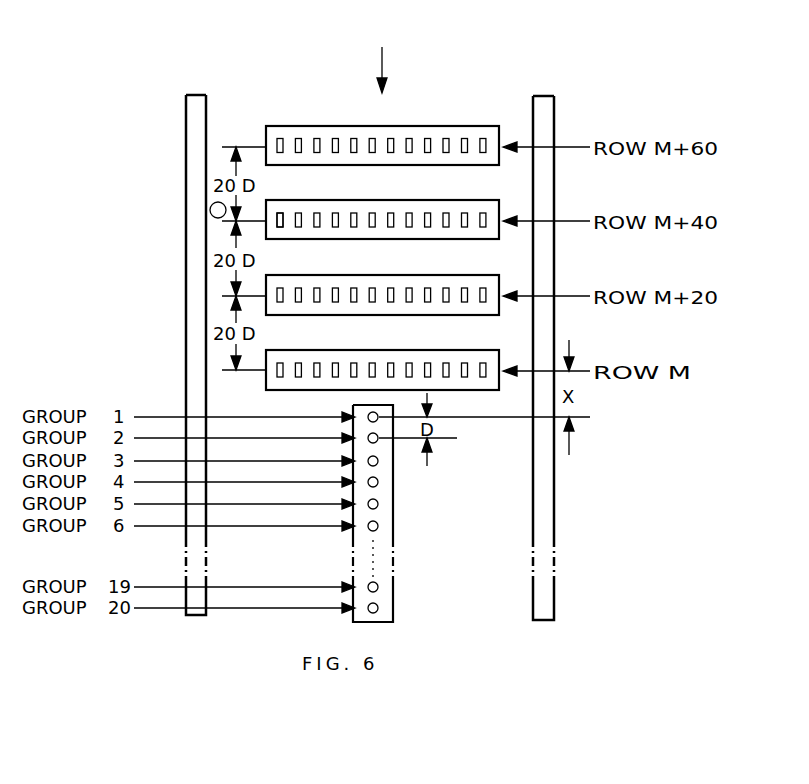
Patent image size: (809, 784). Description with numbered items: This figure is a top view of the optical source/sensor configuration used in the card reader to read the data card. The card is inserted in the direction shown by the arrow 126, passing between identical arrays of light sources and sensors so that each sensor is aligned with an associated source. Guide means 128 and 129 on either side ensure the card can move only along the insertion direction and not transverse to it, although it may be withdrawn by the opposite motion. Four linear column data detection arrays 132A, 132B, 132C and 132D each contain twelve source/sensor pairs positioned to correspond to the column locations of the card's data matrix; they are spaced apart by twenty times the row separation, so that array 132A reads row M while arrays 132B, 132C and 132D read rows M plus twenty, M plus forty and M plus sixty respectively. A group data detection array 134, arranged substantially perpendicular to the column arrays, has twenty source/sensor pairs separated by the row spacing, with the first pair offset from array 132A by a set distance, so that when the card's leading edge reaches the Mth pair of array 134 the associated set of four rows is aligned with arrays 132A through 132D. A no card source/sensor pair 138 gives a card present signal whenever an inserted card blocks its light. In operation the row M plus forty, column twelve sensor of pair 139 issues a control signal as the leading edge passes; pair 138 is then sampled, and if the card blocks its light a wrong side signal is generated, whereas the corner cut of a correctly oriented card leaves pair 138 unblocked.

The arrow 126 is at (385, 58).
The guide means 128 is at (185, 258).
The guide means 129 is at (554, 475).
The column data detection array 132A is at (412, 350).
The column data detection array 132B is at (412, 275).
The column data detection array 132C is at (400, 200).
The column data detection array 132D is at (400, 126).
The group data detection array 134 is at (393, 520).
The no card source/sensor pair 138 is at (212, 205).
The source/sensor pair 139 is at (281, 212).